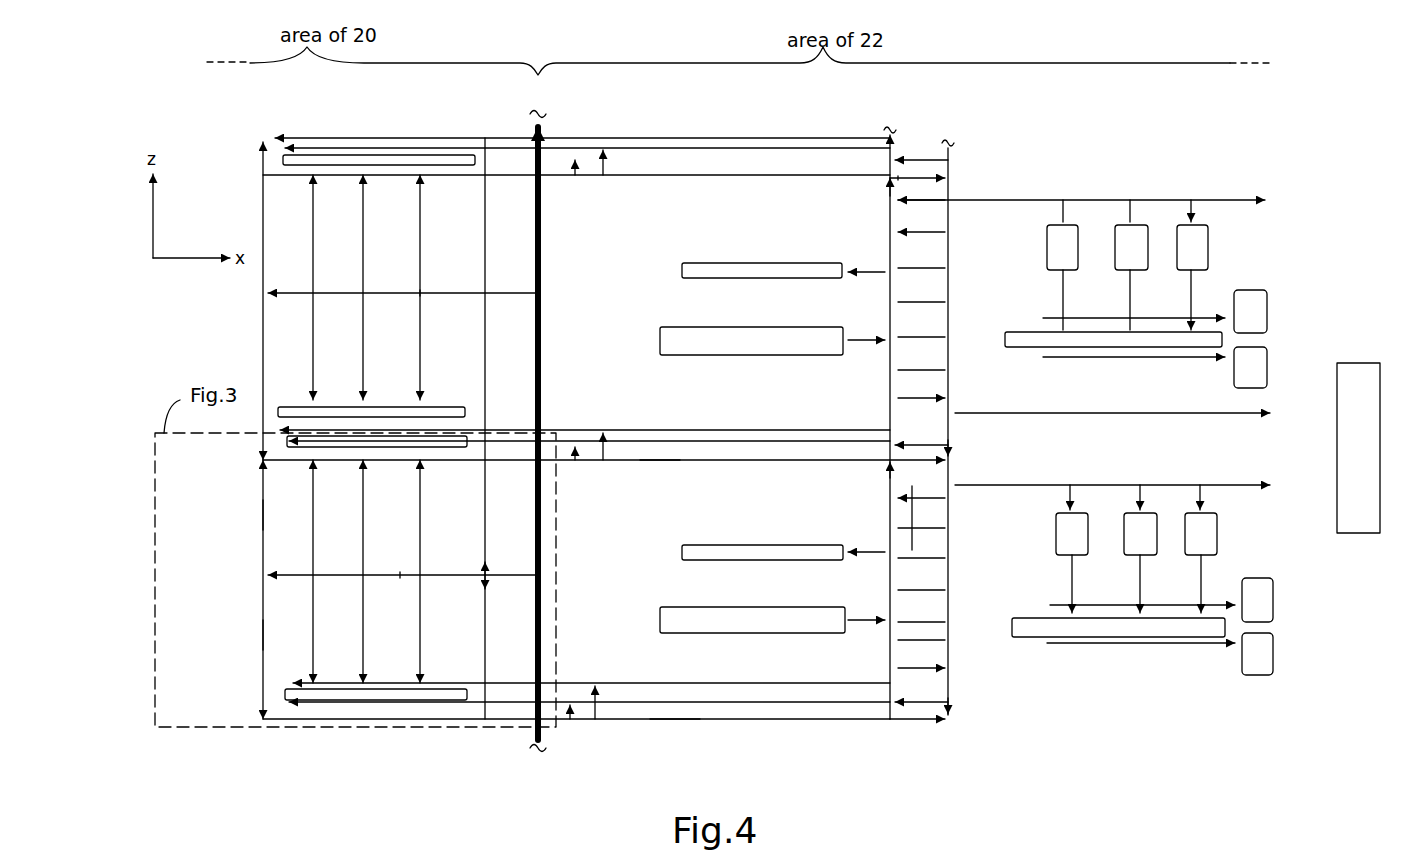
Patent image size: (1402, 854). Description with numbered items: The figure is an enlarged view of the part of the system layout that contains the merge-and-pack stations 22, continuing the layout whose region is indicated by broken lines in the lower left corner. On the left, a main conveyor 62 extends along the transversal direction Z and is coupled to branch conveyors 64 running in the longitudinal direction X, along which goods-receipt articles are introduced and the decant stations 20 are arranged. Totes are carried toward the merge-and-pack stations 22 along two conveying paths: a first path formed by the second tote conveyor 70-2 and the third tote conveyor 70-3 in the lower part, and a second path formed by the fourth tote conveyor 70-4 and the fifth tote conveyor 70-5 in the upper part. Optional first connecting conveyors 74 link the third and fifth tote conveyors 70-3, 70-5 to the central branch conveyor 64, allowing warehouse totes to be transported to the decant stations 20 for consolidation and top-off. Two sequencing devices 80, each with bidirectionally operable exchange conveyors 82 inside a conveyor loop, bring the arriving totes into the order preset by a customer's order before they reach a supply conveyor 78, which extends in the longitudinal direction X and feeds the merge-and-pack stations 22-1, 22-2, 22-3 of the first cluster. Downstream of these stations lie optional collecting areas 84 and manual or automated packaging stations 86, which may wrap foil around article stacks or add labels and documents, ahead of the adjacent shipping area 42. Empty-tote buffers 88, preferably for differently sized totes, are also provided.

The decant station 20 is at (432, 155).
The merge-and-pack station 22 is at (1200, 225).
The first merge-and-pack station 22-1 is at (1048, 542).
The second merge-and-pack station 22-2 is at (1130, 510).
The third merge-and-pack station 22-3 is at (1222, 537).
The shipping area 42 is at (1362, 365).
The main conveyor 62 is at (545, 220).
The branch conveyor 64 is at (432, 293).
The second tote conveyor 70-2 is at (263, 637).
The third tote conveyor 70-3 is at (675, 723).
The fourth tote conveyor 70-4 is at (263, 518).
The fifth tote conveyor 70-5 is at (660, 462).
The first connecting conveyor 74 is at (497, 610).
The supply conveyor 78 is at (995, 200).
The sequencing device 80 is at (920, 185).
The exchange conveyor 82 is at (912, 548).
The collecting area 84 is at (1018, 335).
The packaging station 86 is at (1268, 372).
The empty-tote buffer 88 is at (665, 343).